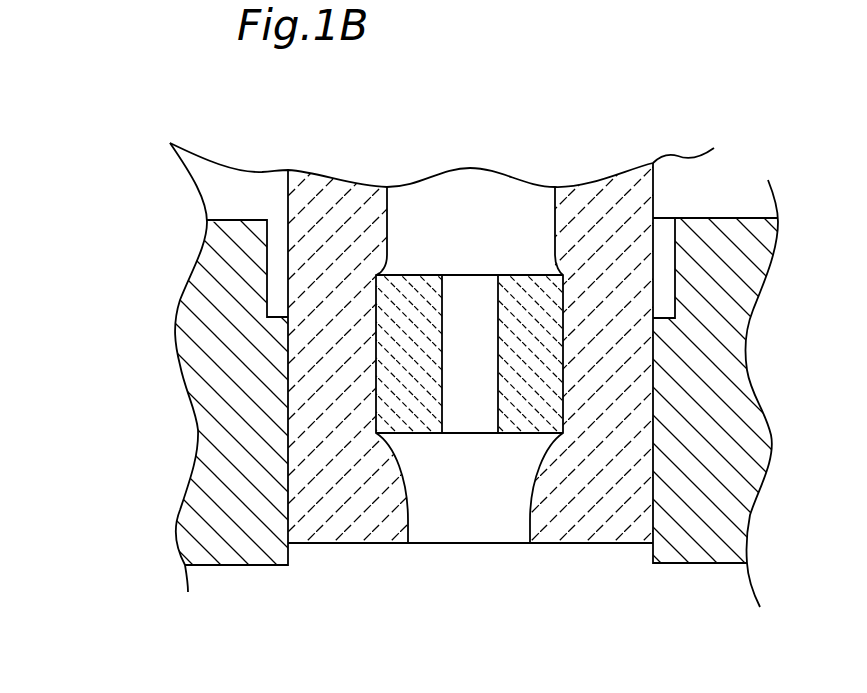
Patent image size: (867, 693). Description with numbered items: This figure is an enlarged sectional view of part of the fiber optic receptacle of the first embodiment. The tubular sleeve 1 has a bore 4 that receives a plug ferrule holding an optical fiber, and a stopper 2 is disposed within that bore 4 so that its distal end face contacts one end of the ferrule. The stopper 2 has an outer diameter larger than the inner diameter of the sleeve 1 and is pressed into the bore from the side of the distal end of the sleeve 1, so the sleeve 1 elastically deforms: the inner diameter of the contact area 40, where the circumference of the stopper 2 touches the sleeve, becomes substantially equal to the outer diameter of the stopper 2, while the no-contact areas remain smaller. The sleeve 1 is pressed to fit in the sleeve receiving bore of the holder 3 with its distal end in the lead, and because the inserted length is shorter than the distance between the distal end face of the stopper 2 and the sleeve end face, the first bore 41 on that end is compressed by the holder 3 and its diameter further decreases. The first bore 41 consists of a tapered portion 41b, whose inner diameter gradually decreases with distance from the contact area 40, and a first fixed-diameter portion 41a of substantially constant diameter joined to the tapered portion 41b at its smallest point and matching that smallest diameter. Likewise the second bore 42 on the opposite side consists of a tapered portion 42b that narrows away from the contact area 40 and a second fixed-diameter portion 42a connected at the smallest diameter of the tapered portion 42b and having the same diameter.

The sleeve 1 is at (603, 215).
The stopper 2 is at (532, 295).
The holder 3 is at (717, 520).
The bore 4 is at (207, 356).
The contact area 40 is at (375, 352).
The first bore 41 is at (229, 356).
The first fixed-diameter portion 41a is at (410, 517).
The tapered portion 41b is at (392, 458).
The second bore 42 is at (228, 356).
The second fixed-diameter portion 42a is at (387, 213).
The tapered portion 42b is at (386, 252).